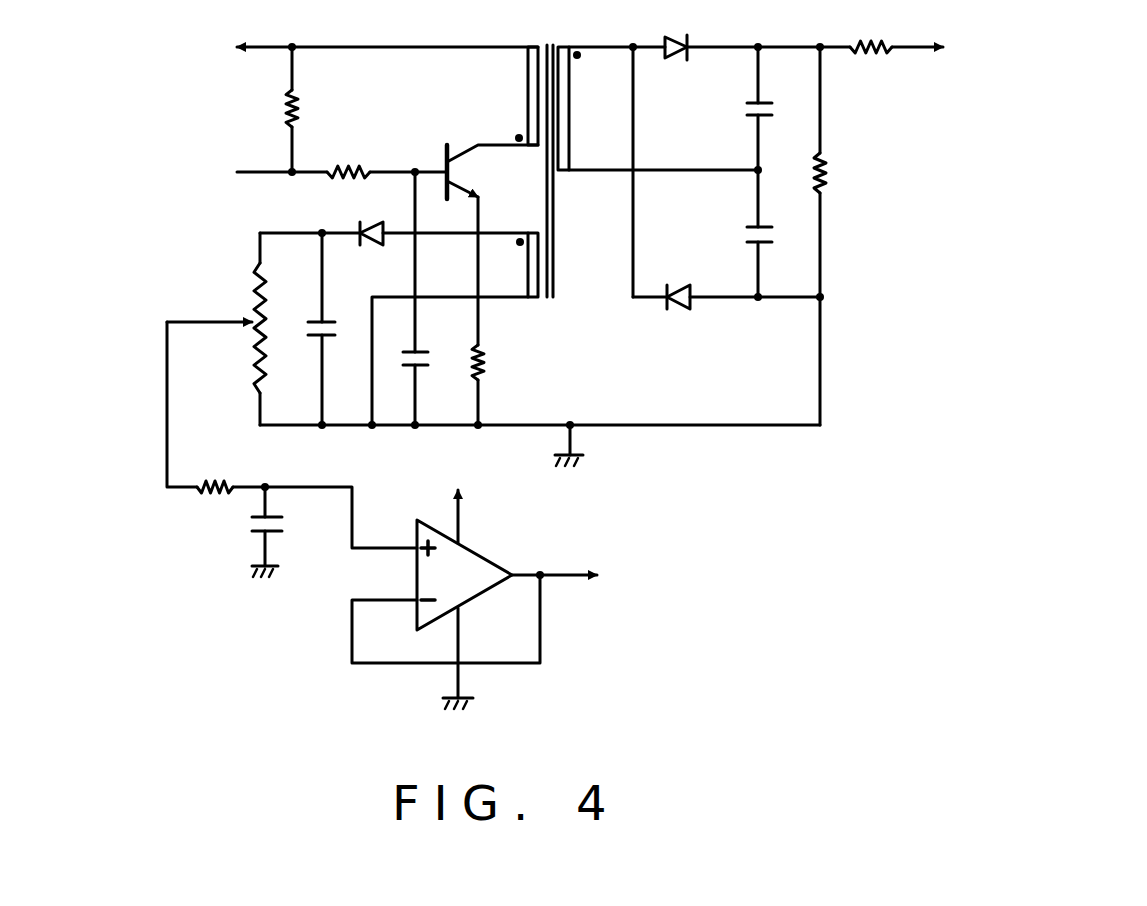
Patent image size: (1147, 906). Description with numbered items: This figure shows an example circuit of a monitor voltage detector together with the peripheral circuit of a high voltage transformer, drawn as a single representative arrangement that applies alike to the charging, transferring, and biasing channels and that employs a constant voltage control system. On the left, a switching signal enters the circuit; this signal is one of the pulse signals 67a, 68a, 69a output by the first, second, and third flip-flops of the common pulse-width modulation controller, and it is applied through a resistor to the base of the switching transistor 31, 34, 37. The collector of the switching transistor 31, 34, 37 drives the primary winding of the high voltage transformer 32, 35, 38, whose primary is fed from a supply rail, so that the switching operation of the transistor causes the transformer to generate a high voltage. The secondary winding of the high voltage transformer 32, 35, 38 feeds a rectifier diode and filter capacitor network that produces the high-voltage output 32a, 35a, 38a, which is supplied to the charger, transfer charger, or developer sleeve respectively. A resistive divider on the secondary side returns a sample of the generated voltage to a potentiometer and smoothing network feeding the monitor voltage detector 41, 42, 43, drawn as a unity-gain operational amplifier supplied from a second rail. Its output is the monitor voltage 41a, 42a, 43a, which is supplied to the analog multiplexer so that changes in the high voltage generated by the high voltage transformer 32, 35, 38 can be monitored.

The switching transistor 31 is at (428, 137).
The switching transistor 34 is at (428, 137).
The switching transistor 37 is at (441, 143).
The high voltage transformer for charging 32 is at (569, 150).
The high voltage transformer for transferring 35 is at (569, 150).
The high voltage transformer for biasing 38 is at (553, 43).
The high-voltage output 32a is at (996, 80).
The high-voltage output 35a is at (996, 80).
The high-voltage output 38a is at (996, 80).
The monitor voltage detector 41 is at (502, 584).
The monitor voltage detector 42 is at (502, 584).
The monitor voltage detector 43 is at (478, 545).
The monitor output 41a is at (685, 589).
The monitor output 42a is at (685, 589).
The monitor output 43a is at (685, 589).
The charge output 67a is at (196, 184).
The transfer output 68a is at (196, 184).
The bias output 69a is at (196, 184).